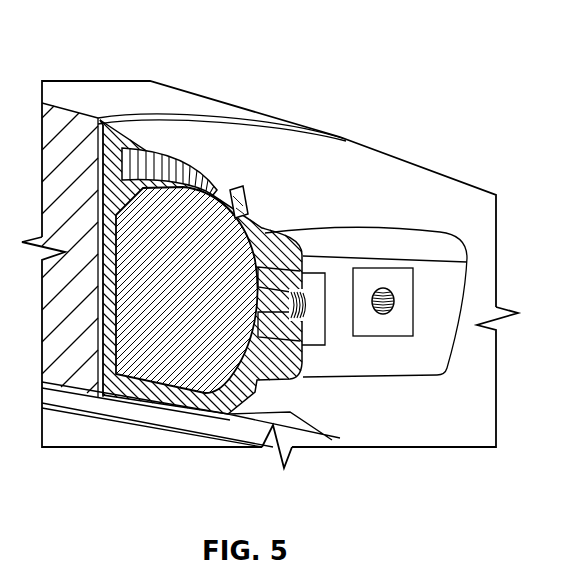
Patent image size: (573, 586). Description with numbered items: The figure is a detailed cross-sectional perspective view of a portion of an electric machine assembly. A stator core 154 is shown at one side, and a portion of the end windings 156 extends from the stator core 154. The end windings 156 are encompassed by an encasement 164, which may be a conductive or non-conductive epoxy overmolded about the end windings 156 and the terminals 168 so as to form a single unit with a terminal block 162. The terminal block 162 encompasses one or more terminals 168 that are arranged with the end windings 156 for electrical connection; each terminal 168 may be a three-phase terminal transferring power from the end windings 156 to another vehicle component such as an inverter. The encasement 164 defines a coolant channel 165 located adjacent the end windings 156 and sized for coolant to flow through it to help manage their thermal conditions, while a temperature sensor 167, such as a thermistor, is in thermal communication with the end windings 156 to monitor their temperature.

The stator core 154 is at (125, 97).
The end windings 156 is at (212, 312).
The terminal block 162 is at (371, 233).
The encasement 164 is at (311, 163).
The coolant channel 165 is at (158, 152).
The temperature sensor 167 is at (238, 195).
The terminals 168 is at (303, 340).